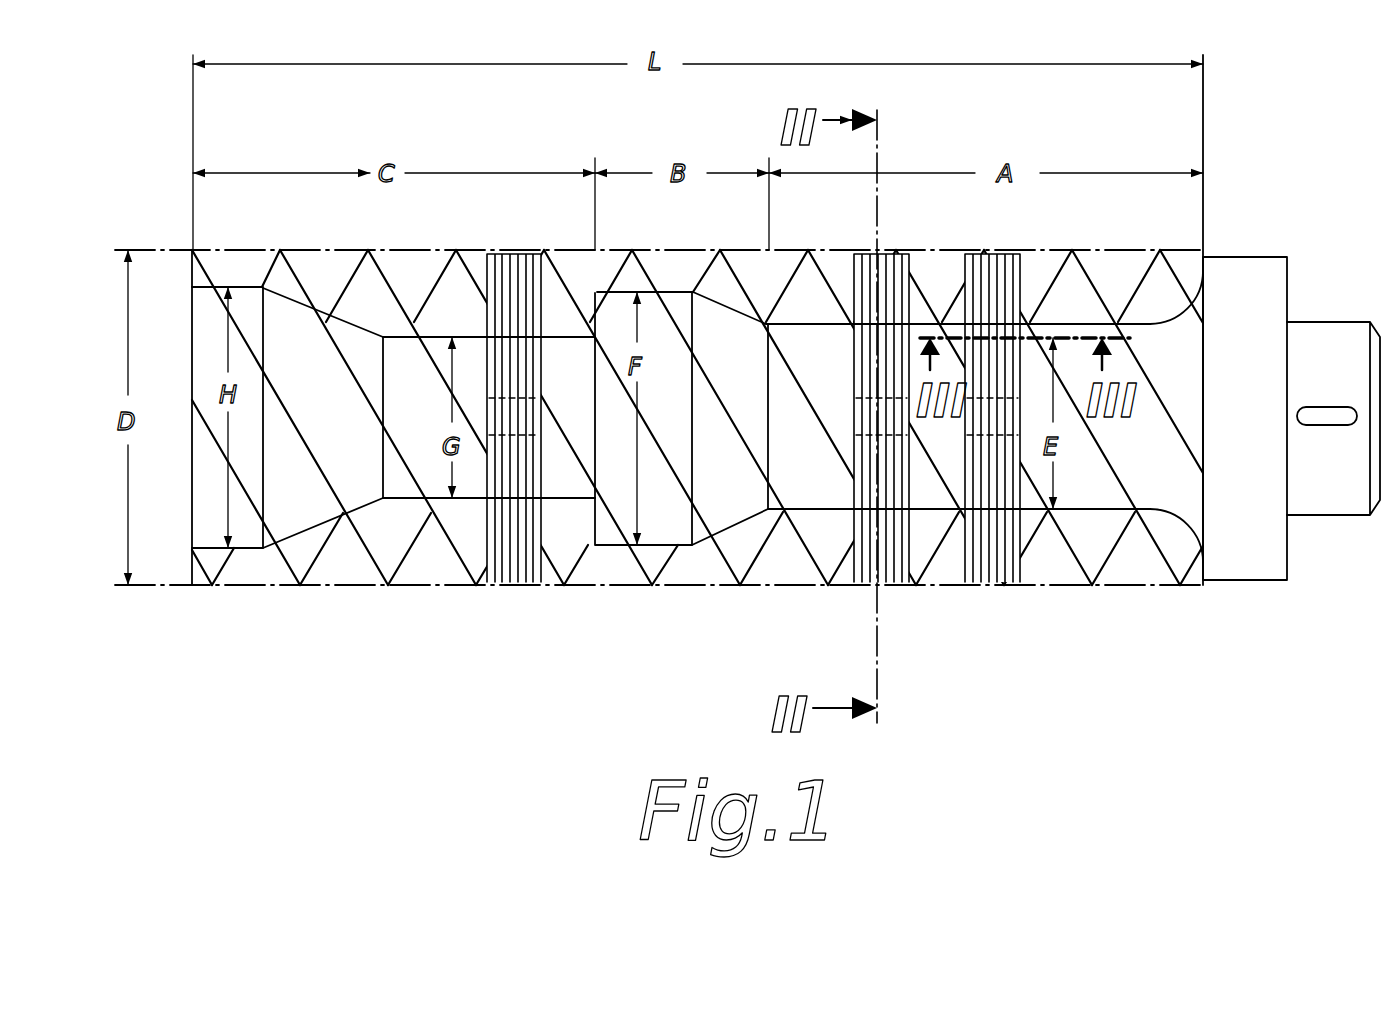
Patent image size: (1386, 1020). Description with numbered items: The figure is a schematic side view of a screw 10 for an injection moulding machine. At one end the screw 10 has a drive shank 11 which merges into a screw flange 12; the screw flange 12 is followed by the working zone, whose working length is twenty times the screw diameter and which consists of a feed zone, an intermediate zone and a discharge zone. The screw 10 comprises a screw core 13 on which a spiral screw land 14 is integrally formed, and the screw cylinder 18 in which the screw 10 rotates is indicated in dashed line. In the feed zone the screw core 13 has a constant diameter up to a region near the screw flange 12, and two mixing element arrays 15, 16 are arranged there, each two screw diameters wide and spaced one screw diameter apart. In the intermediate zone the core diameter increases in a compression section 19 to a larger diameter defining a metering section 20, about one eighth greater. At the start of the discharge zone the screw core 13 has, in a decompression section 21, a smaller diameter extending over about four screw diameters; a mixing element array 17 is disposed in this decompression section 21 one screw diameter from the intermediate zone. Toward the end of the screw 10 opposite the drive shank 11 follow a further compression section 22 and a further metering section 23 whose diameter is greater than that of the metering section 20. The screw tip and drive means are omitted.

The screw 10 is at (1280, 106).
The drive shank 11 is at (1347, 337).
The screw flange 12 is at (1257, 277).
The screw core 13 is at (1073, 320).
The spiral screw land 14 is at (1150, 323).
The mixing element array 15 is at (1002, 254).
The mixing element array 16 is at (895, 251).
The mixing element array 17 is at (500, 254).
The screw cylinder 18 is at (305, 250).
The compression section 19 is at (733, 513).
The metering section 20 is at (610, 532).
The decompression section 21 is at (565, 485).
The further compression section 22 is at (325, 513).
The further metering section 23 is at (245, 540).